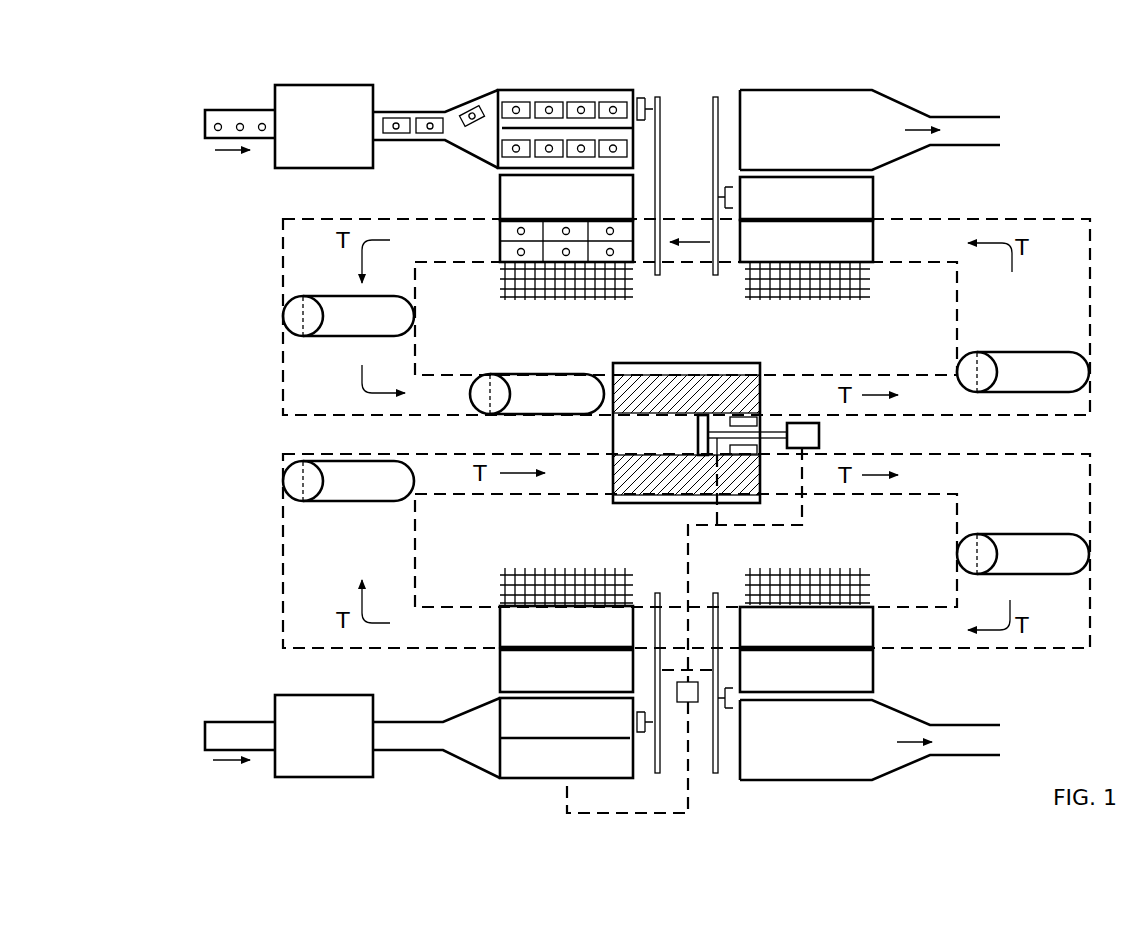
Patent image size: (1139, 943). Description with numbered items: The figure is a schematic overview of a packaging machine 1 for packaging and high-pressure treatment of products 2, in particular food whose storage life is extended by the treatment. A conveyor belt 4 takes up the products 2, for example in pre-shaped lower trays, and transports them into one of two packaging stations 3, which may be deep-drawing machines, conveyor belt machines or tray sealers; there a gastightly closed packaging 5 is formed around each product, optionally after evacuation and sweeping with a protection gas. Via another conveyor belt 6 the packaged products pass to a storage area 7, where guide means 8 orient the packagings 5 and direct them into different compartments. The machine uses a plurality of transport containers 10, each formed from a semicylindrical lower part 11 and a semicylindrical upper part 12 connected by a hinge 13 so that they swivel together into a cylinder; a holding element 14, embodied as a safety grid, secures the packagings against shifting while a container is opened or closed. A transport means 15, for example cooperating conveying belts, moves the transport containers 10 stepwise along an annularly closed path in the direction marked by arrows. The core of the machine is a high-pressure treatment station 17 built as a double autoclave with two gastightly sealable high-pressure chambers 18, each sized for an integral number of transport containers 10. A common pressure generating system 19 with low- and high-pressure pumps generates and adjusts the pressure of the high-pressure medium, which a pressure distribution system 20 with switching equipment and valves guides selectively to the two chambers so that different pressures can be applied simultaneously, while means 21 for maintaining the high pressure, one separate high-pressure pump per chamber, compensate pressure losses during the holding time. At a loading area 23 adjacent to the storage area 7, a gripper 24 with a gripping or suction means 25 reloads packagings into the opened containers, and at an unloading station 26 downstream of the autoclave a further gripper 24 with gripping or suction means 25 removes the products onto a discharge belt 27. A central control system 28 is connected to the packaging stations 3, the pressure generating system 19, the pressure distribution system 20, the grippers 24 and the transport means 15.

The packaging machine 1 is at (252, 67).
The products 2 is at (218, 122).
The packaging station 3 is at (355, 88).
The conveyor belt 4 is at (208, 130).
The packaging 5 is at (390, 118).
The conveyor belt 6 is at (395, 141).
The storage area 7 is at (568, 98).
The guide means 8 is at (530, 127).
The transport container 10 is at (405, 323).
The lower part 11 is at (498, 243).
The upper part 12 is at (502, 180).
The hinge 13 is at (520, 219).
The holding element 14 is at (520, 300).
The transport means 15 is at (300, 383).
The high-pressure treatment station 17 is at (629, 363).
The high-pressure chamber 18 is at (693, 380).
The pressure generating system 19 is at (819, 436).
The pressure distribution system 20 is at (698, 432).
The means for maintaining the high pressure 21 is at (757, 421).
The loading area 23 is at (640, 288).
The gripper 24 is at (661, 110).
The gripping or suction means 25 is at (643, 96).
The unloading station 26 is at (732, 288).
The discharge belt 27 is at (851, 104).
The central control system 28 is at (690, 703).